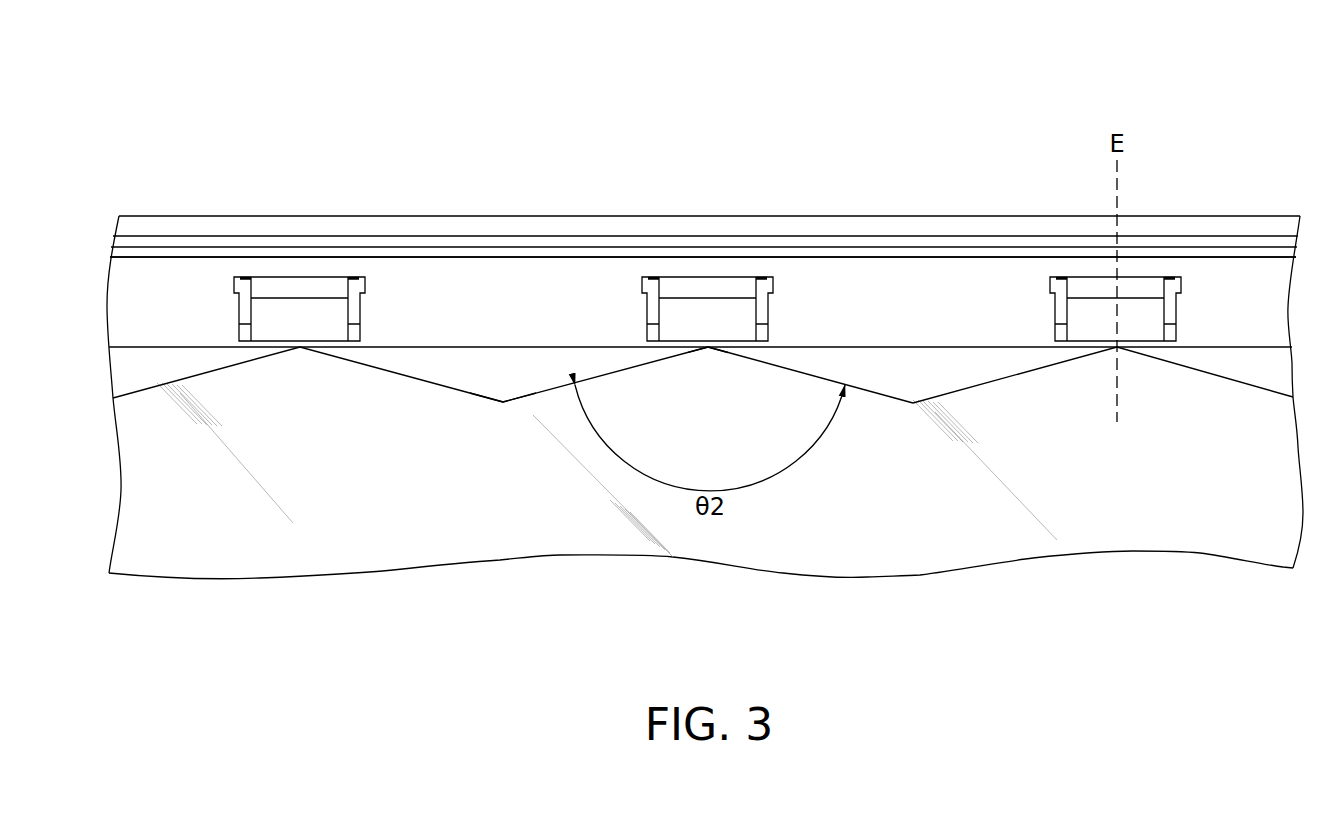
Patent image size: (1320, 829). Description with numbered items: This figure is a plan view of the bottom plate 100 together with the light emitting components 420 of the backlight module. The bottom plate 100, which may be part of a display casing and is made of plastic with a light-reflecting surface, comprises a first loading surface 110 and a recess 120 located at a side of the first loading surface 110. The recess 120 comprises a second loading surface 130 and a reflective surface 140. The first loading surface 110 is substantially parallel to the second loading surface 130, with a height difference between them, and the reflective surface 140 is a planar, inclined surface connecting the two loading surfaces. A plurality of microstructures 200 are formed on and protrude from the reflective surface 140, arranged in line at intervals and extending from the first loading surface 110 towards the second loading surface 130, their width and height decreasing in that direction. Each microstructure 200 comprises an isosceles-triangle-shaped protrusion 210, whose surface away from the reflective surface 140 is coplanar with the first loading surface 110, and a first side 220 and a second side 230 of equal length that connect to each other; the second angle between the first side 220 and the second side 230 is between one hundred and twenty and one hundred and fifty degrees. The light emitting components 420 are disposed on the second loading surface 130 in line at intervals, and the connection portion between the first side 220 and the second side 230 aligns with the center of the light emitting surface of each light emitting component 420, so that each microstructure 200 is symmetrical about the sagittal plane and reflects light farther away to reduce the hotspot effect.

The bottom plate 100 is at (532, 505).
The first loading surface 110 is at (406, 490).
The recess 120 is at (150, 301).
The second loading surface 130 is at (445, 303).
The reflective surface 140 is at (499, 380).
The microstructure 200 is at (708, 278).
The protrusion 210 is at (680, 383).
The first side 220 is at (617, 373).
The second side 230 is at (813, 373).
The light emitting component 420 is at (703, 317).